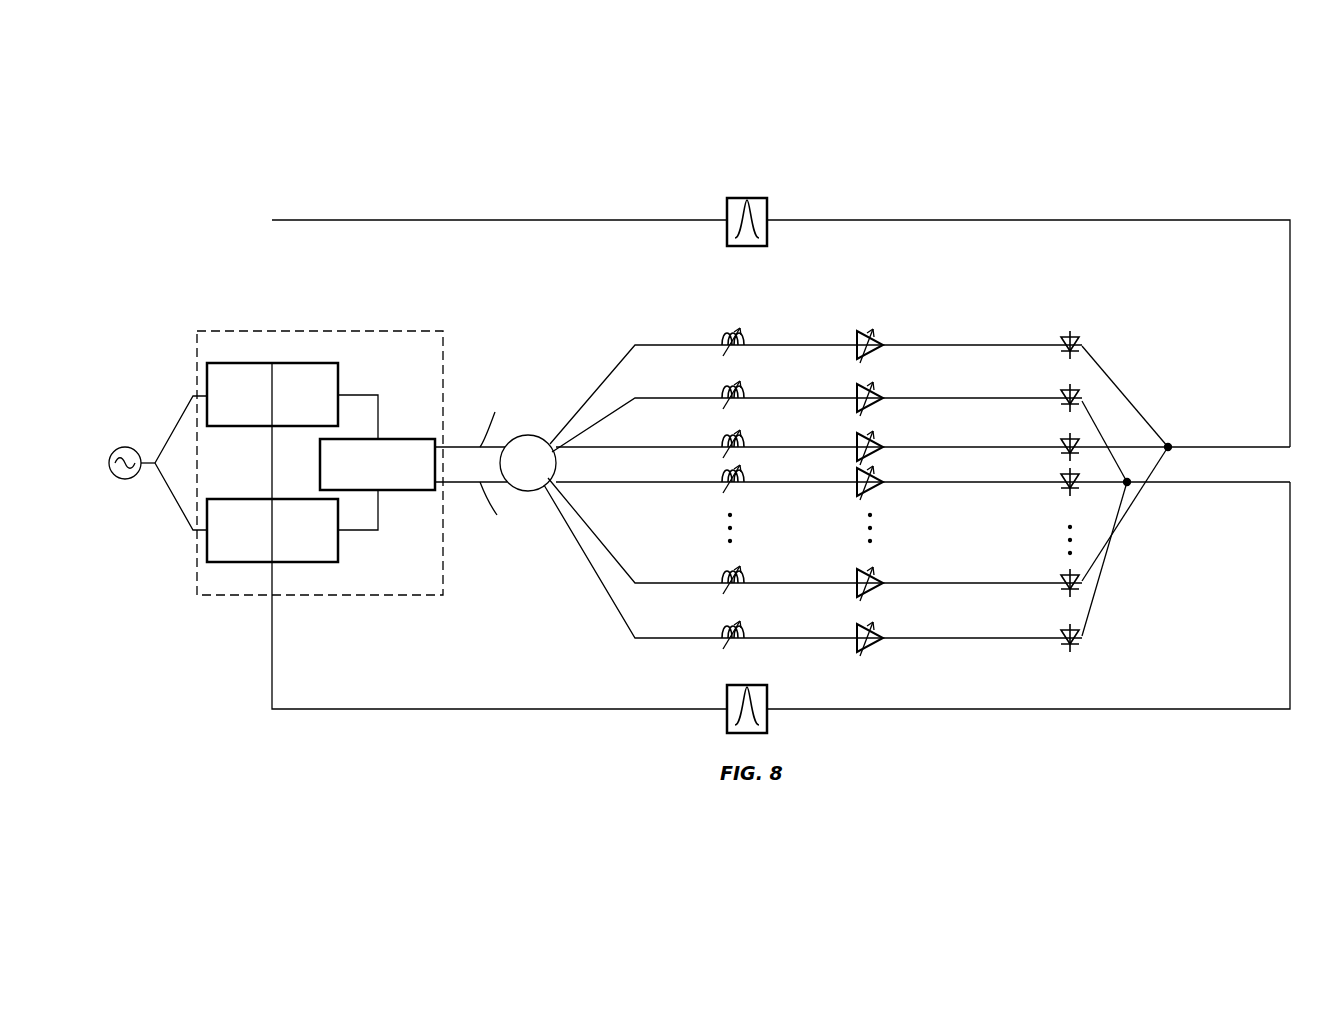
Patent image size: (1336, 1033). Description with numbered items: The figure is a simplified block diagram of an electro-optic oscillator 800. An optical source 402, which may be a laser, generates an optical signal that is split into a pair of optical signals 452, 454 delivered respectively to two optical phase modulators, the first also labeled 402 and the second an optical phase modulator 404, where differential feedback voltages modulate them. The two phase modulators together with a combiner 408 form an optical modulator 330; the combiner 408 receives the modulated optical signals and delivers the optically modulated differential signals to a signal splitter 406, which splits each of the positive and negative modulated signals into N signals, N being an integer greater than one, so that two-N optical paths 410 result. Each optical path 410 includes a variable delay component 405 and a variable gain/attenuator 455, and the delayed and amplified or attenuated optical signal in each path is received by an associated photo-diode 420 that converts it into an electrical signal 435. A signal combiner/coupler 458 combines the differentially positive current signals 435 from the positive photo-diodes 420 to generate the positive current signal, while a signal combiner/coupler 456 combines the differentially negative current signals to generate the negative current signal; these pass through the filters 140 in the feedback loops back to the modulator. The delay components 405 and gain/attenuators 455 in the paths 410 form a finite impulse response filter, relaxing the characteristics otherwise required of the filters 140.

The electro-optic oscillator 800 is at (1268, 150).
The optical source 402 is at (117, 449).
The optical signal 452 is at (178, 421).
The optical signal 454 is at (180, 507).
The optical modulator 330 is at (243, 330).
The optical phase modulator 404 is at (290, 562).
The combiner 408 is at (320, 462).
The signal splitter 406 is at (528, 492).
The optical paths 410 is at (588, 401).
The variable delay component 405 is at (745, 336).
The variable gain/attenuator 455 is at (880, 338).
The photo-diode 420 is at (1058, 343).
The electrical signal 435 is at (1123, 392).
The signal combiner/coupler 458 is at (1171, 450).
The signal combiner/coupler 456 is at (1130, 485).
The filters 140 is at (747, 198).